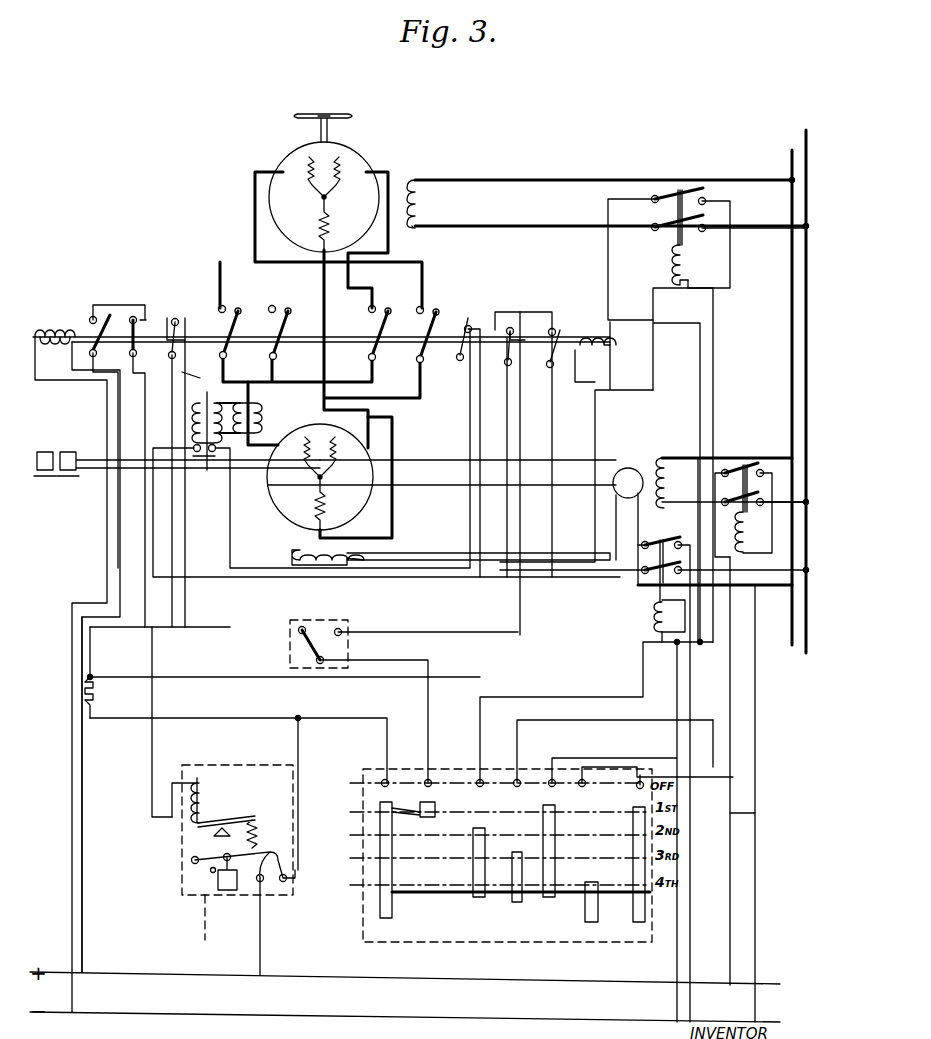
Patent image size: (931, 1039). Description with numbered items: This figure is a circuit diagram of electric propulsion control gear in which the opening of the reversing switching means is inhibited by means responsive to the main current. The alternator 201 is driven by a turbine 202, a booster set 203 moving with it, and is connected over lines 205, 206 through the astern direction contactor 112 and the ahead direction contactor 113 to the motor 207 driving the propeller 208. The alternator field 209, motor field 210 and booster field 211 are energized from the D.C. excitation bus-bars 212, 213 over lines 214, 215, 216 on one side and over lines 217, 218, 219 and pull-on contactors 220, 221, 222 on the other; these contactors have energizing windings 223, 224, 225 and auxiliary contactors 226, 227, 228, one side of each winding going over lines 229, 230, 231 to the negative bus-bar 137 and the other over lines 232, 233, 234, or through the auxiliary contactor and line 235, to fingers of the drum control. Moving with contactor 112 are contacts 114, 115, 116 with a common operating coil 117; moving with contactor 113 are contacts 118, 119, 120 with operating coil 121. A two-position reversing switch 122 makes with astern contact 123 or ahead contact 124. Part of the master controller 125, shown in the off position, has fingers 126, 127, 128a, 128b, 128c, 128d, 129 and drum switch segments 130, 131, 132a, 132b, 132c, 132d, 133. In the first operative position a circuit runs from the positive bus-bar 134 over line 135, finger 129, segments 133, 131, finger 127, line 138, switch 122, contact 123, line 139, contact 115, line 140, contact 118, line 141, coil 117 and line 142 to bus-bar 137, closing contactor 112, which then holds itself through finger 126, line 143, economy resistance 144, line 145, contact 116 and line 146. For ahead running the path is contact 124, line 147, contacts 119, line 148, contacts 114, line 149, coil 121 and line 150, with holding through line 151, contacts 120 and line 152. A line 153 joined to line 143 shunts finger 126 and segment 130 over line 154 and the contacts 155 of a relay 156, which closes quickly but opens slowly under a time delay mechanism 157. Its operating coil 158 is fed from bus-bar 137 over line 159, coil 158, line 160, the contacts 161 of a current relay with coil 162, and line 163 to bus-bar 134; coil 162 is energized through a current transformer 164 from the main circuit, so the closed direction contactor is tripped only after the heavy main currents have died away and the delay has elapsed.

The astern direction contactor 112 is at (224, 308).
The ahead direction contactor 113 is at (378, 308).
The contact 114 is at (178, 316).
The contact 115 is at (144, 302).
The contact 116 is at (96, 316).
The operating coil 117 is at (58, 330).
The contact 118 is at (466, 318).
The contact 119 is at (511, 320).
The contact 120 is at (556, 320).
The operating coil 121 is at (594, 329).
The reversing switch 122 is at (350, 648).
The astern contact 123 is at (300, 622).
The ahead contact 124 is at (342, 630).
The master controller 125 is at (400, 940).
The finger 126 is at (389, 781).
The finger 127 is at (431, 781).
The finger 128a is at (483, 781).
The finger 128b is at (520, 781).
The finger 128c is at (556, 781).
The finger 128d is at (586, 781).
The finger 129 is at (637, 788).
The drum switch segment 130 is at (382, 912).
The drum switch segment 131 is at (392, 812).
The drum switch segment 132a is at (475, 898).
The drum switch segment 132b is at (515, 900).
The drum switch segment 132c is at (547, 898).
The drum switch segment 132d is at (590, 925).
The drum switch segment 133 is at (636, 922).
The positive bus-bar 134 is at (660, 982).
The line 135 is at (764, 815).
The negative bus-bar 137 is at (660, 1020).
The line 138 is at (408, 662).
The line 139 is at (222, 628).
The line 140 is at (143, 397).
The line 141 is at (470, 444).
The line 142 is at (104, 565).
The line 143 is at (218, 718).
The economy resistance 144 is at (92, 698).
The line 145 is at (116, 538).
The line 146 is at (117, 304).
The line 147 is at (440, 633).
The line 148 is at (170, 417).
The line 149 is at (204, 384).
The line 150 is at (575, 382).
The line 151 is at (487, 685).
The line 152 is at (480, 372).
The line 153 is at (298, 743).
The line 154 is at (262, 950).
The contacts 155 is at (283, 882).
The relay 156 is at (198, 916).
The time delay mechanism 157 is at (228, 892).
The operating coil 158 is at (195, 818).
The line 159 is at (172, 906).
The line 160 is at (150, 740).
The contacts 161 is at (386, 453).
The operating coil 162 is at (212, 405).
The line 163 is at (83, 786).
The current transformer 164 is at (256, 410).
The alternator 201 is at (285, 490).
The turbine 202 is at (70, 476).
The booster set 203 is at (628, 467).
The line 205 is at (324, 356).
The line 206 is at (372, 426).
The motor 207 is at (290, 200).
The propeller 208 is at (330, 130).
The alternator field 209 is at (292, 546).
The motor field 210 is at (418, 192).
The booster field 211 is at (666, 458).
The excitation bus-bar 212 is at (792, 168).
The excitation bus-bar 213 is at (806, 147).
The line 214 is at (497, 179).
The line 215 is at (694, 458).
The line 216 is at (748, 587).
The line 217 is at (544, 226).
The line 218 is at (680, 502).
The line 219 is at (415, 568).
The contactor 220 is at (654, 771).
The contactor 221 is at (672, 224).
The contactor 222 is at (748, 462).
The energizing winding 223 is at (654, 612).
The energizing winding 224 is at (700, 269).
The energizing winding 225 is at (758, 470).
The auxiliary contactor 226 is at (672, 538).
The auxiliary contactor 227 is at (668, 190).
The auxiliary contactor 228 is at (732, 470).
The line 229 is at (730, 703).
The line 230 is at (690, 883).
The line 231 is at (755, 733).
The line 232 is at (643, 664).
The line 233 is at (660, 304).
The line 234 is at (713, 660).
The line 235 is at (677, 668).